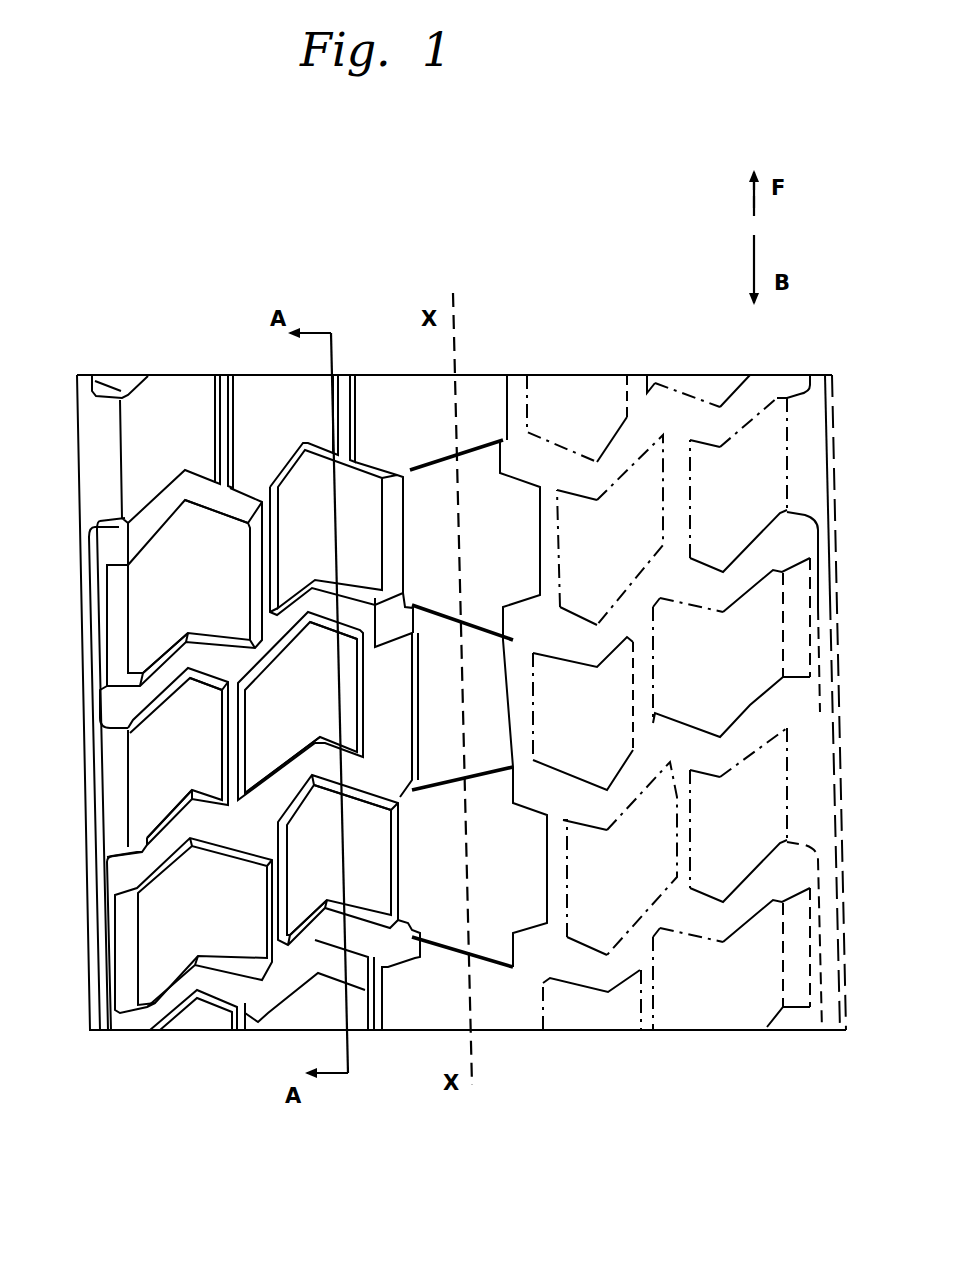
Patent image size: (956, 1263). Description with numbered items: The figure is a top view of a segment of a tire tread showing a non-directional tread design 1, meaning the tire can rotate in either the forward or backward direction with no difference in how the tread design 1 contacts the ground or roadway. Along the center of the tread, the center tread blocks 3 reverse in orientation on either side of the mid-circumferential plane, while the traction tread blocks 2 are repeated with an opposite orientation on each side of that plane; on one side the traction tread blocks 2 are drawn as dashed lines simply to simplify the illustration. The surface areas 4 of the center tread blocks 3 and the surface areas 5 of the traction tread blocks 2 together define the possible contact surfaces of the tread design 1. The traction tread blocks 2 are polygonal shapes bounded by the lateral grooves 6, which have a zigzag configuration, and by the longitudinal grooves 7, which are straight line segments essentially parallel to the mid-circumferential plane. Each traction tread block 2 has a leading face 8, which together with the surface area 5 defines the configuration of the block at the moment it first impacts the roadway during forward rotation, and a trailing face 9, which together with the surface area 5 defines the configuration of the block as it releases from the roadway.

The non-directional tread design 1 is at (490, 290).
The traction tread blocks 2 is at (385, 492).
The center tread blocks 3 is at (545, 547).
The surface areas of the center tread blocks 4 is at (505, 498).
The surface areas of the traction tread blocks 5 is at (360, 563).
The lateral grooves 6 is at (216, 500).
The longitudinal grooves 7 is at (268, 567).
The leading face 8 is at (218, 512).
The trailing face 9 is at (172, 653).